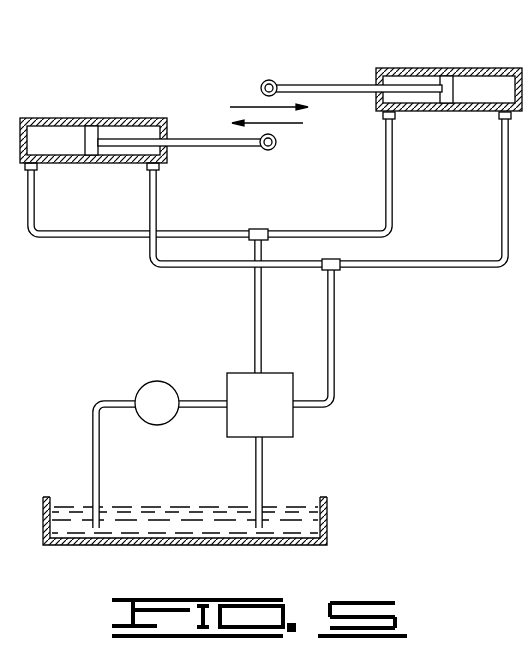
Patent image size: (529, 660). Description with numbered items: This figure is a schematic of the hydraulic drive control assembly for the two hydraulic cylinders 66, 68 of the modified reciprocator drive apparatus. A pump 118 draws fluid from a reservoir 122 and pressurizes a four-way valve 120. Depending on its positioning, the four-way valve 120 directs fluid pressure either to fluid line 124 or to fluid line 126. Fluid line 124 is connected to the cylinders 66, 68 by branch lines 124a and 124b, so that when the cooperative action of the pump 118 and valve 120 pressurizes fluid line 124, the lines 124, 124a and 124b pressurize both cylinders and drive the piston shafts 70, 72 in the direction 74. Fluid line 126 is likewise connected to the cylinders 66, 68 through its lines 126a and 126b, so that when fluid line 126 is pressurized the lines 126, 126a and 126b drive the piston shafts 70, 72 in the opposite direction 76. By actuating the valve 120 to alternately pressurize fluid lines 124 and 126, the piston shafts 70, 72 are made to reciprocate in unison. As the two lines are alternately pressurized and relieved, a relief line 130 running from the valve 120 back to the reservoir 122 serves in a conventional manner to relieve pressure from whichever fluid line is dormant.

The hydraulic cylinder 66 is at (435, 68).
The hydraulic cylinder 68 is at (96, 117).
The piston shaft 70 is at (327, 84).
The piston shaft 72 is at (195, 146).
The direction 74 is at (285, 122).
The direction 76 is at (243, 106).
The pump 118 is at (162, 428).
The four-way valve 120 is at (294, 428).
The reservoir 122 is at (331, 512).
The fluid line 124 is at (337, 326).
The line 124a is at (157, 198).
The line 124b is at (503, 142).
The fluid line 126 is at (262, 311).
The line 126a is at (36, 186).
The line 126b is at (393, 169).
The relief line 130 is at (265, 476).